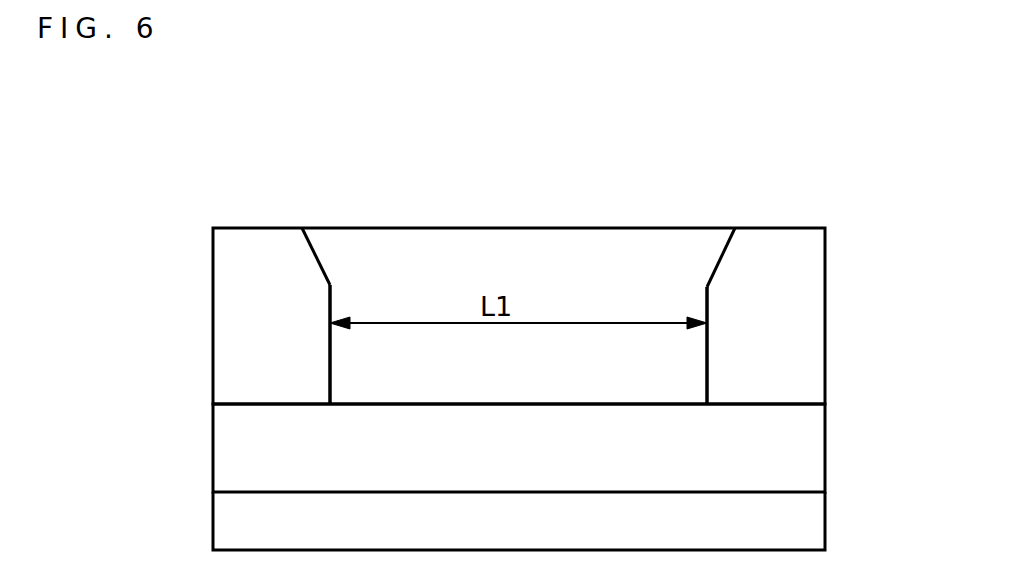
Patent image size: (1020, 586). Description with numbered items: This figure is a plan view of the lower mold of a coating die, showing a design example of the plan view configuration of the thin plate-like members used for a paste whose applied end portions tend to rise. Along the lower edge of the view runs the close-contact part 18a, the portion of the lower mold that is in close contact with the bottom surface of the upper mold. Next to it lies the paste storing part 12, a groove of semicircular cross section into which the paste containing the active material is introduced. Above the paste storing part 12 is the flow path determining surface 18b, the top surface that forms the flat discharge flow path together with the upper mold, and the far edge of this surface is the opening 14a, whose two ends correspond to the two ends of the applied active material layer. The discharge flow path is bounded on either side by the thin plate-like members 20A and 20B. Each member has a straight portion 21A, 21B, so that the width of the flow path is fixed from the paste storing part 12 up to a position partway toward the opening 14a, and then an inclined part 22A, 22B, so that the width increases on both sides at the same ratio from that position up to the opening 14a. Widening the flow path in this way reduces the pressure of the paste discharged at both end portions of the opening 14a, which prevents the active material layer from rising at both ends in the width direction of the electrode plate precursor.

The paste storing part 12 is at (803, 451).
The opening of the discharge flow path 14a is at (574, 228).
The close-contact part 18a is at (800, 531).
The flow path determining surface 18b is at (682, 250).
The thin plate-like member 20A is at (235, 299).
The thin plate-like member 20B is at (805, 311).
The straight portion 21A is at (330, 367).
The straight portion 21B is at (707, 357).
The inclined part 22A is at (315, 254).
The inclined part 22B is at (720, 262).